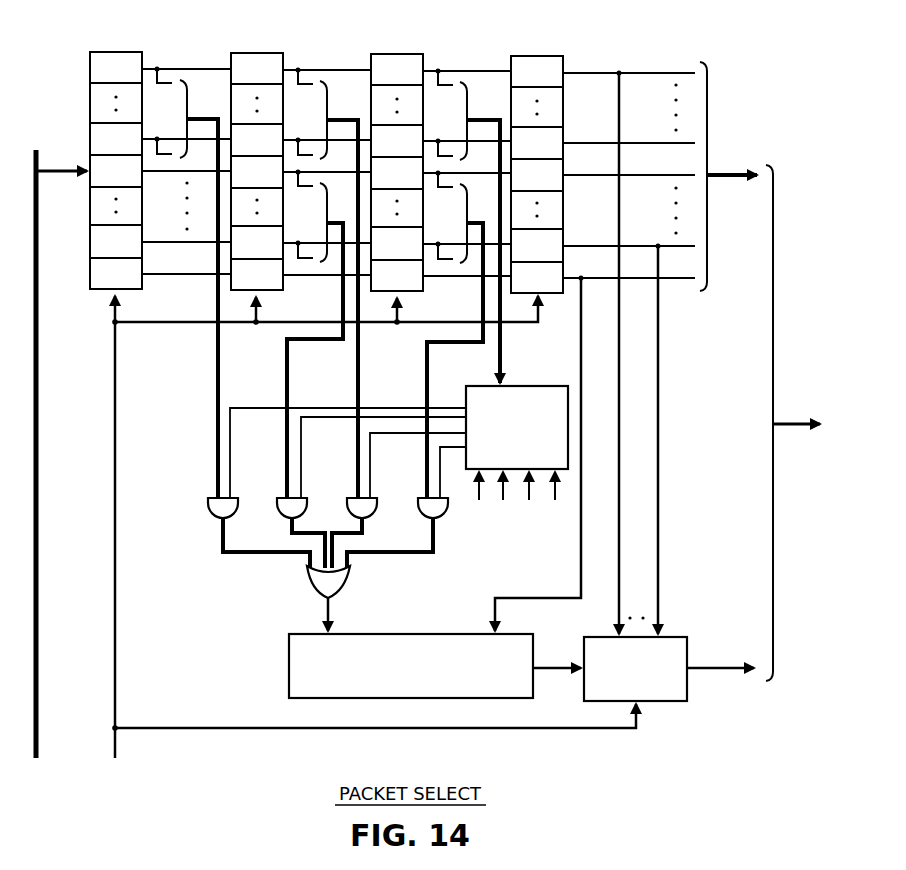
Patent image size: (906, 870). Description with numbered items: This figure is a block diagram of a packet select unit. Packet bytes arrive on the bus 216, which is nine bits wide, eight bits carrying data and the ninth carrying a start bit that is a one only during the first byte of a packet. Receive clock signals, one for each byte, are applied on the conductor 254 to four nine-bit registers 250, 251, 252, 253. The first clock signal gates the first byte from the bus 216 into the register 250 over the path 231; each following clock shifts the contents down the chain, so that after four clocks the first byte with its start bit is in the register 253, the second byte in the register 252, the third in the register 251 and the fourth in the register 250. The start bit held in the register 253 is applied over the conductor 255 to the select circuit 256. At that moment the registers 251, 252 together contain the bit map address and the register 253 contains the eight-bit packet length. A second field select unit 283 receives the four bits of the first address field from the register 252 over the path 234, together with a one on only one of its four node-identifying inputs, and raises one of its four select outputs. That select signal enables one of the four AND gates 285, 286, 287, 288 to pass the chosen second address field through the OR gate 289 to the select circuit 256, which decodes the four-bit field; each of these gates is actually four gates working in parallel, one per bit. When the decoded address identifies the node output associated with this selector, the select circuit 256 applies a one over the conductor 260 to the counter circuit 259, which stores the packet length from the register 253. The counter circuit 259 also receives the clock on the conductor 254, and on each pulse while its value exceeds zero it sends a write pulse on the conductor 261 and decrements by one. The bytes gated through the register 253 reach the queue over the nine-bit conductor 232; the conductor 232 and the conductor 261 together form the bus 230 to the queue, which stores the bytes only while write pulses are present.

The bus 216 is at (38, 746).
The bus 230 is at (800, 421).
The path 231 is at (64, 167).
The conductor 232 is at (737, 171).
The path 234 is at (494, 362).
The register 250 is at (125, 52).
The register 251 is at (266, 53).
The register 252 is at (406, 54).
The register 253 is at (546, 56).
The conductor 254 is at (116, 746).
The conductor 255 is at (578, 346).
The select circuit 256 is at (288, 664).
The counter circuit 259 is at (672, 637).
The conductor 260 is at (543, 660).
The conductor 261 is at (718, 672).
The second field select unit 283 is at (521, 386).
The AND gate 285 is at (444, 514).
The AND gate 286 is at (373, 514).
The AND gate 287 is at (281, 514).
The AND gate 288 is at (212, 514).
The OR gate 289 is at (339, 592).